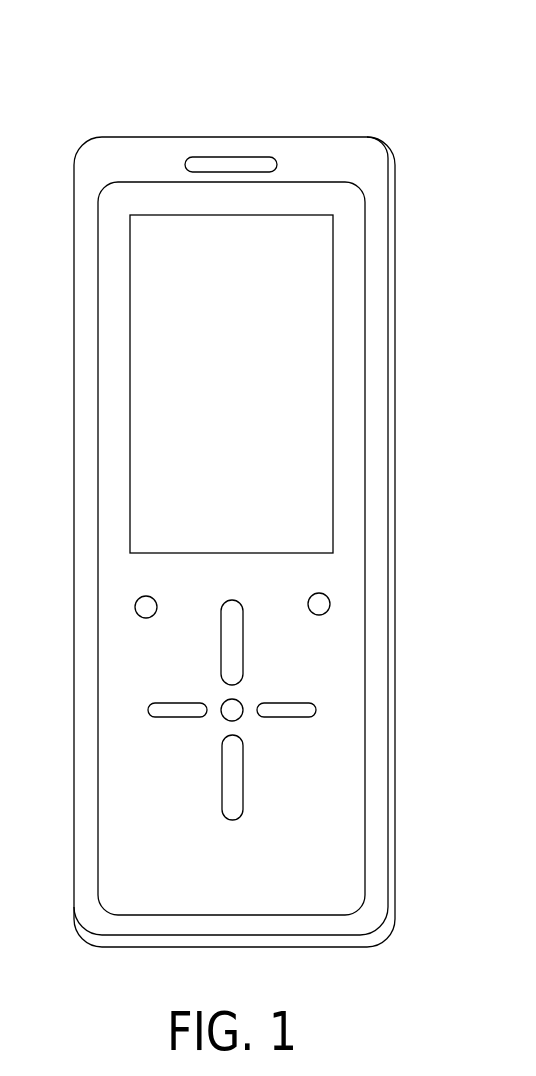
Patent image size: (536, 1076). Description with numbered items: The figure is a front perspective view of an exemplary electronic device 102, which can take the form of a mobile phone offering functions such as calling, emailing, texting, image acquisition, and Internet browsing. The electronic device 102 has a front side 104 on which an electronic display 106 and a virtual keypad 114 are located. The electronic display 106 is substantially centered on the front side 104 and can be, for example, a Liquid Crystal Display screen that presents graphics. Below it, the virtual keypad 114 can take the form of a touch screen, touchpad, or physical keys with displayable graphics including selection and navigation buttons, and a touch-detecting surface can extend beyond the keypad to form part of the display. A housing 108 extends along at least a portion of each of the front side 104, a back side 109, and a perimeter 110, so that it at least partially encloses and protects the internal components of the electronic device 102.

The electronic device 102 is at (335, 61).
The front side 104 is at (145, 162).
The electronic display 106 is at (243, 399).
The housing 108 is at (369, 137).
The back side 109 is at (395, 506).
The perimeter 110 is at (391, 362).
The virtual keypad 114 is at (288, 748).